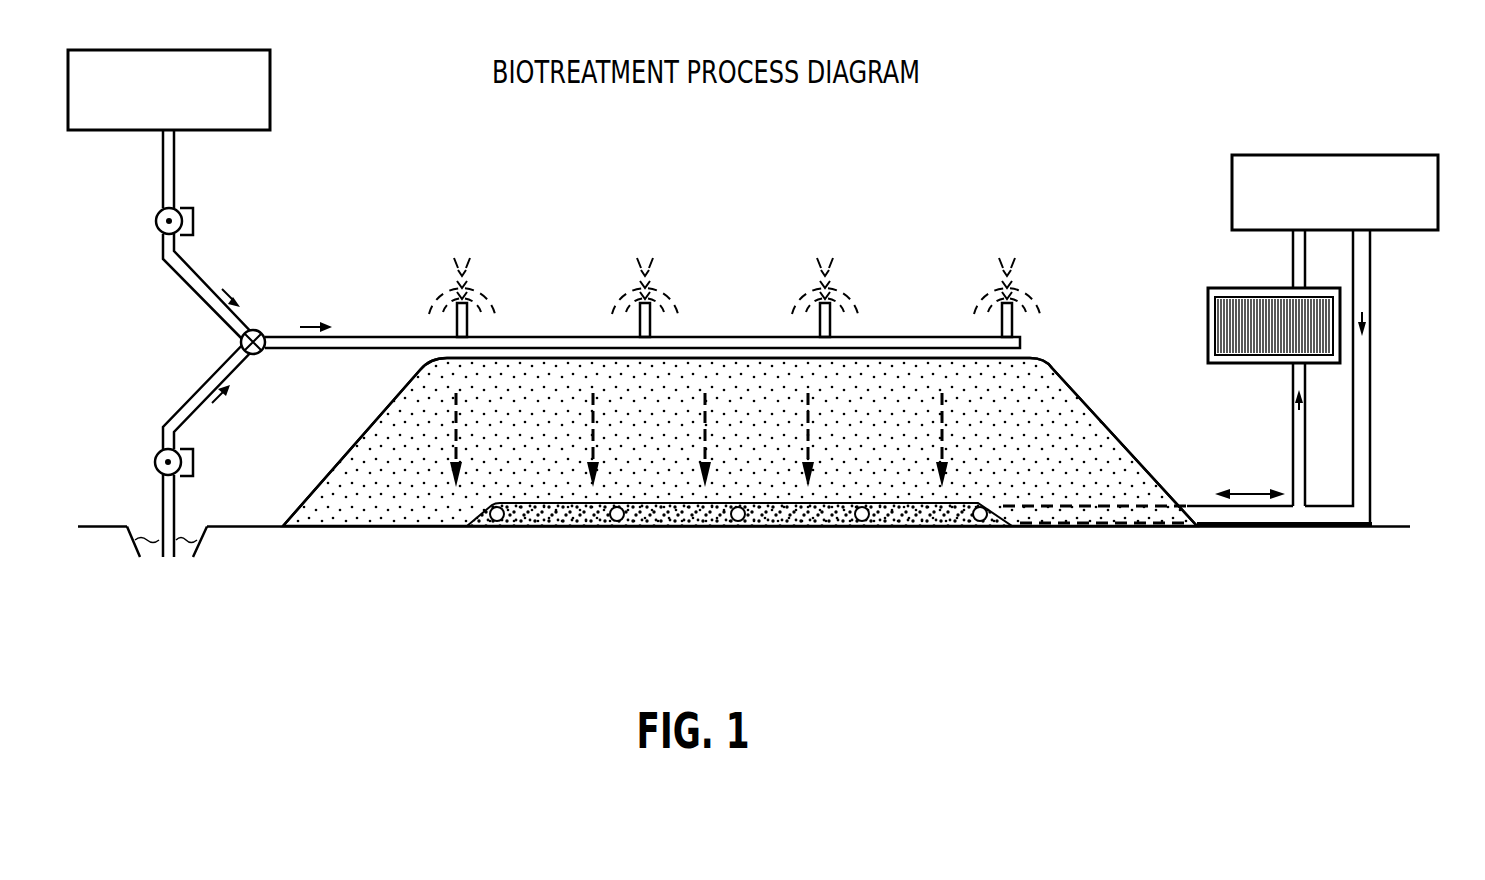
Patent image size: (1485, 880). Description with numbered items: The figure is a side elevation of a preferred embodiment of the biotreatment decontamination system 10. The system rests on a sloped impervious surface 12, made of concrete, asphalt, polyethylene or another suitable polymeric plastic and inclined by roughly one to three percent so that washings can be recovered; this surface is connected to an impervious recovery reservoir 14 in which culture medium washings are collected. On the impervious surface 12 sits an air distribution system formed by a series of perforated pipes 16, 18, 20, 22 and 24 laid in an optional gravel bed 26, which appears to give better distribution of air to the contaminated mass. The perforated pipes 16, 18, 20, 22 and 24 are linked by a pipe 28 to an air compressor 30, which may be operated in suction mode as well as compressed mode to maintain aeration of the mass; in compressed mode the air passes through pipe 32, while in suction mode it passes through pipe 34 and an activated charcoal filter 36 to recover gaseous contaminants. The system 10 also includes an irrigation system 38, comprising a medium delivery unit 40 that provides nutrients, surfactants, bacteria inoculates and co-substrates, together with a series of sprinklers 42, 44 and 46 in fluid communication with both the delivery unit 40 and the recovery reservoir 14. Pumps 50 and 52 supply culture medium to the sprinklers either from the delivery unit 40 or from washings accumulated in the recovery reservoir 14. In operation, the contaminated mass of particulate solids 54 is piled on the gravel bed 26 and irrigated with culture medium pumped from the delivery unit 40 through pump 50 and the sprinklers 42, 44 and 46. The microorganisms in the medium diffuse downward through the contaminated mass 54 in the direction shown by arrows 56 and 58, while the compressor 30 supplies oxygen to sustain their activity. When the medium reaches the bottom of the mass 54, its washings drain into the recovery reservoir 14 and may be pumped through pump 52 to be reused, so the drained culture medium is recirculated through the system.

The decontamination system 10 is at (1128, 258).
The impervious surface 12 is at (1068, 508).
The recovery reservoir 14 is at (141, 532).
The perforated pipe 16 is at (497, 522).
The perforated pipe 18 is at (617, 522).
The perforated pipe 20 is at (738, 522).
The perforated pipe 22 is at (871, 523).
The perforated pipe 24 is at (990, 528).
The gravel bed 26 is at (552, 528).
The pipe 28 is at (1143, 507).
The air compressor 30 is at (1365, 155).
The pipe 32 is at (1373, 350).
The pipe 34 is at (1308, 433).
The activated charcoal filter 36 is at (1247, 292).
The irrigation system 38 is at (235, 254).
The medium delivery unit 40 is at (270, 53).
The sprinkler 42 is at (447, 276).
The sprinkler 44 is at (623, 272).
The sprinkler 46 is at (803, 272).
The pump 50 is at (156, 221).
The pump 52 is at (155, 462).
The contaminated mass of particulate solids 54 is at (1020, 392).
The arrow 56 is at (458, 420).
The arrow 58 is at (810, 426).